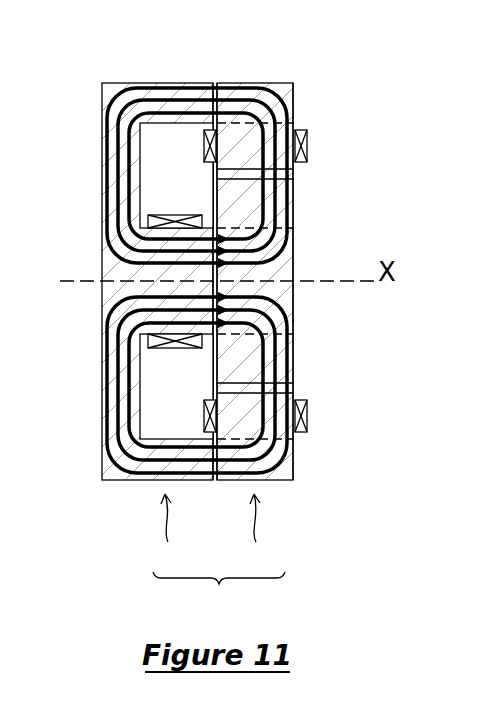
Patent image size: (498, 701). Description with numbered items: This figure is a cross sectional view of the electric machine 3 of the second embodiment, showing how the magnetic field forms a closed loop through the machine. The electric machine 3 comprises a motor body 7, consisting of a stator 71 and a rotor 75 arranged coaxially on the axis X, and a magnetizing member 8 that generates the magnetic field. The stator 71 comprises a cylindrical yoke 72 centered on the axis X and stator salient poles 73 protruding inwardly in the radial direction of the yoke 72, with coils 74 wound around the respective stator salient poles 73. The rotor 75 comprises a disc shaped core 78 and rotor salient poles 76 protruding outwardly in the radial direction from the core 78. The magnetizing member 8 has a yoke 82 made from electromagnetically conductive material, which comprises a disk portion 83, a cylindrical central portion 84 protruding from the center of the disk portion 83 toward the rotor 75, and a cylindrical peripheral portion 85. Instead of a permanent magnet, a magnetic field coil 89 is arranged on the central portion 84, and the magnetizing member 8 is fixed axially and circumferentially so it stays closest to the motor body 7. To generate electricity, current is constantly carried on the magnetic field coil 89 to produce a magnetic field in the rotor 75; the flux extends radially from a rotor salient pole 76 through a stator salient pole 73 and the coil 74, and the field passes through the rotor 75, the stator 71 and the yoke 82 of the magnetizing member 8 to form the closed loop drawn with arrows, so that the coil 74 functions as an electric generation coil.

The electric machine 3 is at (219, 594).
The motor body 7 is at (256, 534).
The magnetizing member 8 is at (168, 534).
The stator 71 is at (258, 82).
The yoke 72 is at (283, 484).
The stator salient pole 73 is at (290, 167).
The coil 74 is at (308, 148).
The rotor 75 is at (294, 262).
The rotor salient pole 76 is at (294, 203).
The core 78 is at (294, 298).
The yoke 82 is at (160, 82).
The disk portion 83 is at (101, 379).
The central portion 84 is at (177, 336).
The peripheral portion 85 is at (201, 484).
The magnetic field coil 89 is at (176, 215).